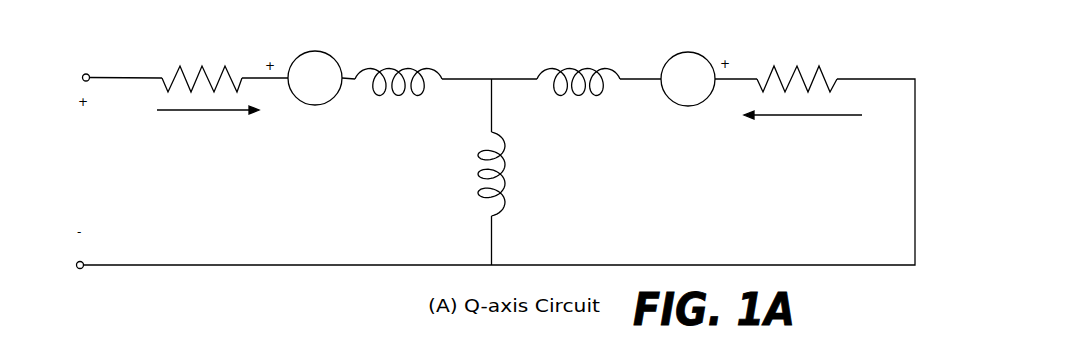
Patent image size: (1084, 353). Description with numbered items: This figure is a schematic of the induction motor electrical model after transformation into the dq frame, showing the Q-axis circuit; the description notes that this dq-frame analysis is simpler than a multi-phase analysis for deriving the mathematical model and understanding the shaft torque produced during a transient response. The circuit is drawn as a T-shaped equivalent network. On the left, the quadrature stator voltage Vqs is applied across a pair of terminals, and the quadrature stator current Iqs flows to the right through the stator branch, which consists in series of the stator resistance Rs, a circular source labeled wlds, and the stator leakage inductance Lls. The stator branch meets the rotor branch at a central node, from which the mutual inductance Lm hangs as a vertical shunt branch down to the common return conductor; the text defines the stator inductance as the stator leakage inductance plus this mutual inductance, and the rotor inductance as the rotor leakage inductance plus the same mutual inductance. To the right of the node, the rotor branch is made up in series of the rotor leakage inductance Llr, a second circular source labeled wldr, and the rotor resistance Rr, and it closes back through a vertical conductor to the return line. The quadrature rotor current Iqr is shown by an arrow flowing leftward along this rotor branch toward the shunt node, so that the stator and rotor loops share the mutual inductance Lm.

The stator resistance Rs is at (202, 58).
The stator speed voltage source (omega_e lambda_ds) wlds is at (319, 64).
The stator leakage inductance Lls is at (398, 60).
The mutual inductance Lm is at (511, 174).
The rotor leakage inductance Llr is at (578, 60).
The rotor speed voltage source (omega_e lambda_dr) wldr is at (691, 65).
The rotor resistance Rr is at (798, 58).
The quadrature stator current Iqs is at (208, 128).
The quadrature rotor current Iqr is at (803, 131).
The quadrature stator voltage Vqs is at (89, 179).